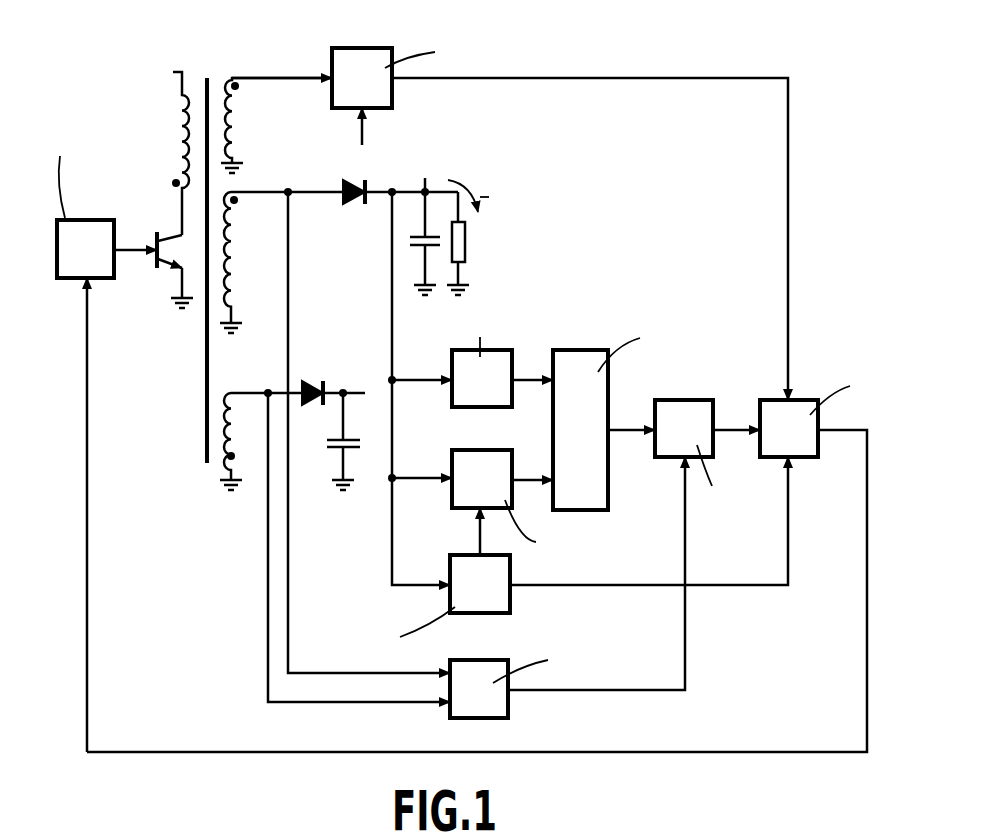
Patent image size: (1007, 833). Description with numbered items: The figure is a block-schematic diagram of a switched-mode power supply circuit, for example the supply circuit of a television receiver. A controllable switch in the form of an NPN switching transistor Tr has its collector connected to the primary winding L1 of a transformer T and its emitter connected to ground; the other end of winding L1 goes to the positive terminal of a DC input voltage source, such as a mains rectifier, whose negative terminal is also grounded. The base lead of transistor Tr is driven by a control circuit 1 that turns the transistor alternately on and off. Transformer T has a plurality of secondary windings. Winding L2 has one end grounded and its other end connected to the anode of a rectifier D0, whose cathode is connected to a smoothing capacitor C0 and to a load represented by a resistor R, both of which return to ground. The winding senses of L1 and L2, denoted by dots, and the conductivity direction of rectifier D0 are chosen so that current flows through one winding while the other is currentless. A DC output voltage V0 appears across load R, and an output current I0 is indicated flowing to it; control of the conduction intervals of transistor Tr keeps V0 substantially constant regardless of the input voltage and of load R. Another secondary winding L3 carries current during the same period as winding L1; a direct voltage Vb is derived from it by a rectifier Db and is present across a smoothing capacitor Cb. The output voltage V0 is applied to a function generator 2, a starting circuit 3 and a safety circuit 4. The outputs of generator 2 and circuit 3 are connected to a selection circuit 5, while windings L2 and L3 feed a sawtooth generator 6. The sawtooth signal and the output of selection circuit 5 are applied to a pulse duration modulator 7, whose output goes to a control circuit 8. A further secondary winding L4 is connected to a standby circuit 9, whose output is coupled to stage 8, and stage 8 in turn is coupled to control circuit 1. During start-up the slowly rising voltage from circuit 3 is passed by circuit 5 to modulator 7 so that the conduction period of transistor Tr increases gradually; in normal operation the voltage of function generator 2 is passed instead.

The control circuit 1 is at (85, 218).
The function generator 2 is at (452, 407).
The starting circuit 3 is at (487, 450).
The safety circuit 4 is at (490, 555).
The selection circuit 5 is at (585, 350).
The sawtooth generator 6 is at (487, 660).
The pulse duration modulator 7 is at (680, 400).
The control circuit 8 is at (790, 400).
The standby circuit 9 is at (386, 49).
The transformer T is at (207, 423).
The NPN switching transistor Tr is at (166, 263).
The primary winding L1 is at (178, 150).
The secondary winding L2 is at (241, 262).
The secondary winding L3 is at (238, 441).
The secondary winding L4 is at (276, 125).
The rectifier D0 is at (344, 212).
The smoothing capacitor C0 is at (418, 237).
The resistor R is at (465, 243).
The DC output voltage V0 is at (431, 176).
The output current I0 is at (479, 198).
The rectifier Db is at (312, 382).
The direct voltage Vb is at (343, 393).
The smoothing capacitor Cb is at (330, 440).